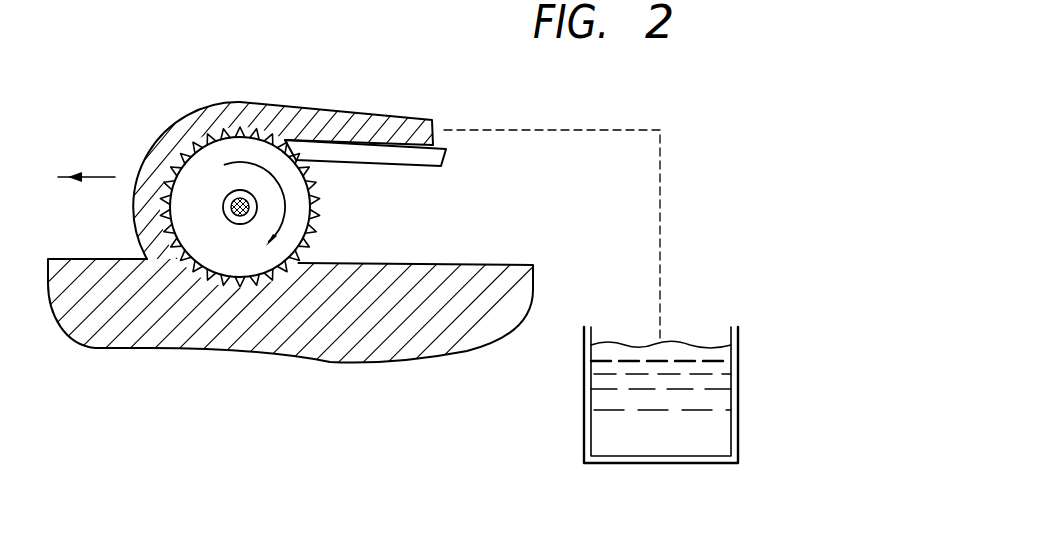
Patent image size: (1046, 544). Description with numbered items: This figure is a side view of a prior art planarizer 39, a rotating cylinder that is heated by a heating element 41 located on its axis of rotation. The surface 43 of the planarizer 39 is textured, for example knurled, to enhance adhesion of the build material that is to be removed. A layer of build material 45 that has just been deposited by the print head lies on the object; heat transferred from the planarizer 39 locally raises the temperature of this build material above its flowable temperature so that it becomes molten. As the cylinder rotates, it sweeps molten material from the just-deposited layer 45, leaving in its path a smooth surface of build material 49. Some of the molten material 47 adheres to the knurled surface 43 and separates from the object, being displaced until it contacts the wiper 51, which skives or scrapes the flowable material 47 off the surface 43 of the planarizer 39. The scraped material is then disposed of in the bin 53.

The planarizer 39 is at (233, 152).
The heating element 41 is at (226, 208).
The surface of the planarizer 43 is at (313, 170).
The layer of build material 45 is at (72, 258).
The displaced molten material 47 is at (299, 103).
The smooth surface of build material 49 is at (493, 264).
The wiper 51 is at (439, 150).
The bin 53 is at (692, 378).